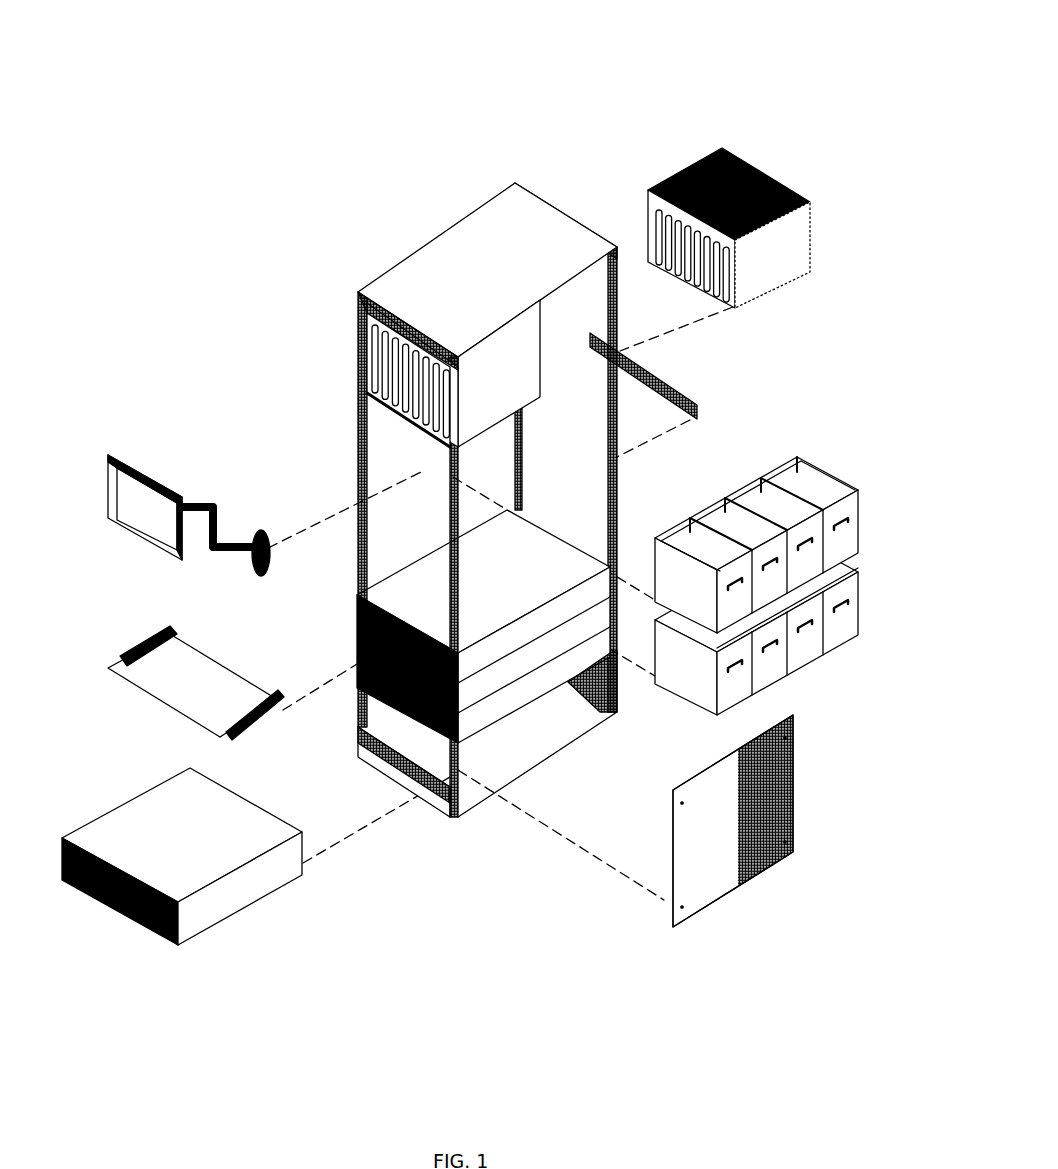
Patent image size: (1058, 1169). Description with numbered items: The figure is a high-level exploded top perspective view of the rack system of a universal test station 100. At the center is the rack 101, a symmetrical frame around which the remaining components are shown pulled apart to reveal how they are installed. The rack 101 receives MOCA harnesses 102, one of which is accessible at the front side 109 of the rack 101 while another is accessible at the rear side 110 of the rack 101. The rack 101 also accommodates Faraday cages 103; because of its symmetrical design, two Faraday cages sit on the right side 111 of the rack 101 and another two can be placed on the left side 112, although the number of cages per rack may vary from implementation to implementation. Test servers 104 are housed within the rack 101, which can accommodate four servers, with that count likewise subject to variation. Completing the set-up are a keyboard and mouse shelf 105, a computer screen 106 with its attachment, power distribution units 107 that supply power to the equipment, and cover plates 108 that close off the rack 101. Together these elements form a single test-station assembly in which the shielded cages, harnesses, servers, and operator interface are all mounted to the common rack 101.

The universal test station 100 is at (664, 36).
The rack 101 is at (445, 252).
The MOCA harness 102 is at (373, 330).
The Faraday cage 103 is at (813, 463).
The test server 104 is at (118, 813).
The keyboard and mouse shelf 105 is at (120, 662).
The computer screen 106 is at (123, 460).
The power distribution unit 107 is at (678, 395).
The cover plate 108 is at (780, 788).
The front side 109 is at (387, 760).
The rear side 110 is at (600, 688).
The right side 111 is at (612, 500).
The left side 112 is at (360, 413).